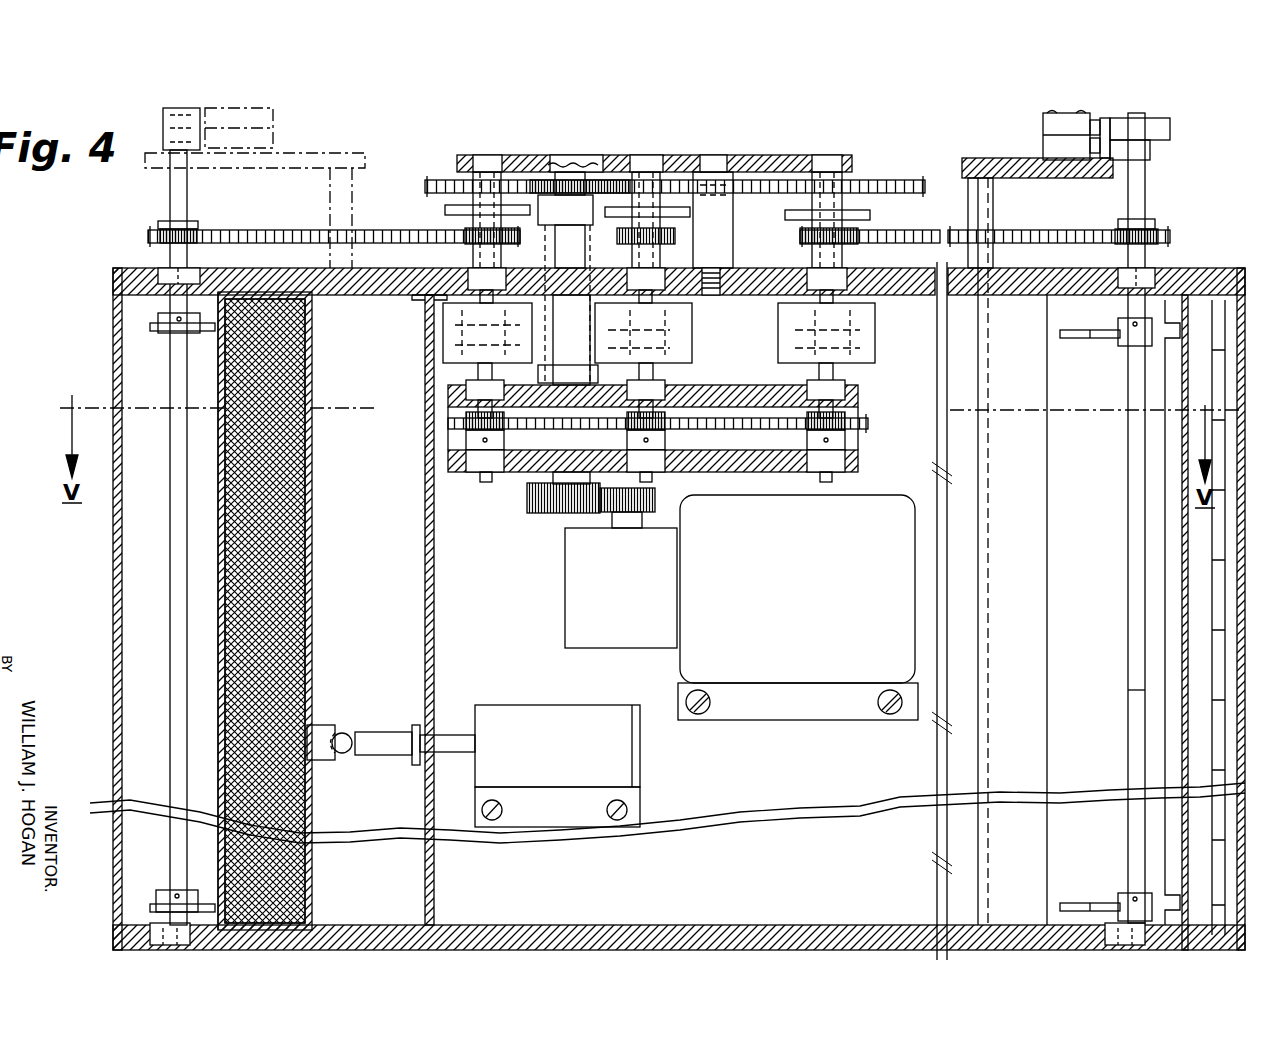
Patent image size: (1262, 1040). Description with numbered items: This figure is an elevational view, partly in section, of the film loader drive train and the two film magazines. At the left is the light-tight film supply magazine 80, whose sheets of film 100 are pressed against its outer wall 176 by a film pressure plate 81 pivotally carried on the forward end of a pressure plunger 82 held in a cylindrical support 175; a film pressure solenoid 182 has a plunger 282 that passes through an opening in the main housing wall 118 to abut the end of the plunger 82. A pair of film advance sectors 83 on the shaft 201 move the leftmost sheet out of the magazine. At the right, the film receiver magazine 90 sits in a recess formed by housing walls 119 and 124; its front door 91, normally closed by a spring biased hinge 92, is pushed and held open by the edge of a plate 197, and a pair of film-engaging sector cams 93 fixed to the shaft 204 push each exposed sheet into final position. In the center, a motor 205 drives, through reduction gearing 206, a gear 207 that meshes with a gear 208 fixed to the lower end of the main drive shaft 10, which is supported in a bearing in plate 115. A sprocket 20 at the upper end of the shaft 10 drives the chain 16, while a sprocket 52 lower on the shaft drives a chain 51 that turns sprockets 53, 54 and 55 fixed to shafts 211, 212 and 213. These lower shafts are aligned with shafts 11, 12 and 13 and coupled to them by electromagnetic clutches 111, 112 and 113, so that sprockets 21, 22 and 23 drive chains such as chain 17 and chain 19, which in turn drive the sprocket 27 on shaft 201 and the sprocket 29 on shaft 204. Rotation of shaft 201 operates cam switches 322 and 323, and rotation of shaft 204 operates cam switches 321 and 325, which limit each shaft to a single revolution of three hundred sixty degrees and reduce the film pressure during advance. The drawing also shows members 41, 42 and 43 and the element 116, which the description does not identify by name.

The main drive shaft 10 is at (573, 263).
The shaft 11 is at (495, 258).
The shaft 12 is at (650, 258).
The shaft 13 is at (838, 258).
The chain 16 is at (438, 182).
The chain 17 is at (255, 230).
The chain 19 is at (1012, 231).
The sprocket 20 is at (575, 178).
The sprocket 21 is at (485, 242).
The sprocket 22 is at (660, 235).
The sprocket 23 is at (840, 236).
The sprocket 27 is at (173, 240).
The sprocket 29 is at (1142, 230).
The plate 41 is at (452, 211).
The plate 42 is at (680, 212).
The plate and belt 43 is at (800, 219).
The chain 51 is at (756, 440).
The sprocket 52 is at (558, 436).
The sprocket 53 is at (466, 434).
The sprocket 54 is at (663, 438).
The sprocket 55 is at (853, 440).
The film supply magazine 80 is at (273, 610).
The film pressure plate 81 is at (291, 611).
The pressure plunger 82 is at (348, 758).
The film advance sectors 83 is at (200, 338).
The film receiver magazine 90 is at (1065, 610).
The front door 91 is at (1208, 530).
The spring biased hinge 92 is at (1222, 605).
The film-engaging sector cams 93 is at (1090, 340).
The sheets of film 100 is at (290, 592).
The electromagnetic clutch 111 is at (487, 333).
The electromagnetic clutch 112 is at (643, 333).
The electromagnetic clutch 113 is at (826, 333).
The plate 115 is at (748, 285).
The base plate 116 is at (578, 930).
The wall of the main housing 118 is at (438, 652).
The wall of the main housing 119 is at (968, 522).
The wall of the main housing 124 is at (1018, 538).
The cylindrical support 175 is at (378, 733).
The outer wall of the supply magazine 176 is at (218, 598).
The film pressure solenoid 182 is at (528, 720).
The plate 197 is at (1178, 693).
The shaft 201 is at (178, 470).
The shaft 204 is at (1128, 630).
The motor 205 is at (798, 607).
The reduction gearing 206 is at (580, 602).
The gear 207 is at (660, 505).
The gear 208 is at (546, 500).
The shaft 211 is at (484, 375).
The shaft 212 is at (654, 375).
The shaft 213 is at (815, 375).
The plunger 282 is at (450, 735).
The cam switch 321 is at (1045, 122).
The cam switch 322 is at (276, 113).
The cam switch 323 is at (280, 140).
The cam switch 325 is at (1050, 148).